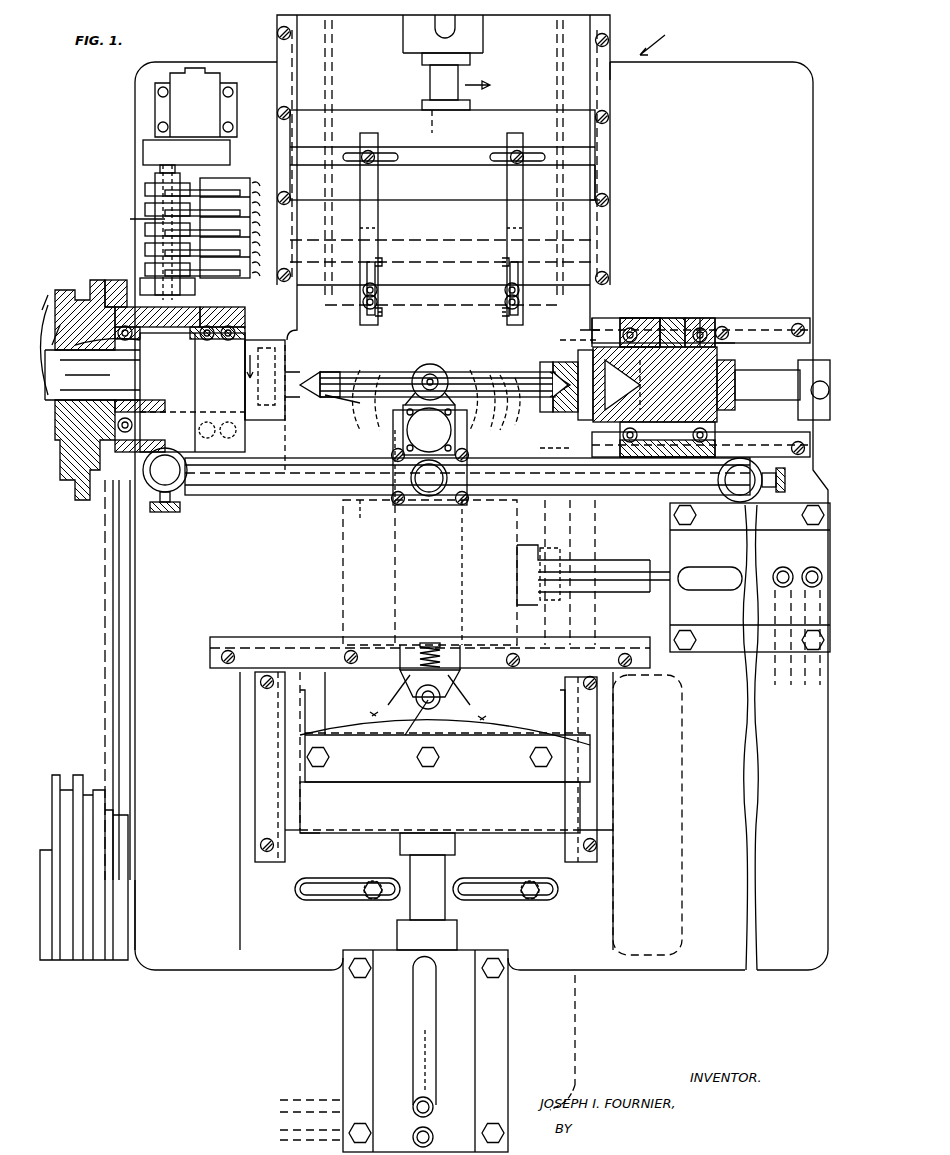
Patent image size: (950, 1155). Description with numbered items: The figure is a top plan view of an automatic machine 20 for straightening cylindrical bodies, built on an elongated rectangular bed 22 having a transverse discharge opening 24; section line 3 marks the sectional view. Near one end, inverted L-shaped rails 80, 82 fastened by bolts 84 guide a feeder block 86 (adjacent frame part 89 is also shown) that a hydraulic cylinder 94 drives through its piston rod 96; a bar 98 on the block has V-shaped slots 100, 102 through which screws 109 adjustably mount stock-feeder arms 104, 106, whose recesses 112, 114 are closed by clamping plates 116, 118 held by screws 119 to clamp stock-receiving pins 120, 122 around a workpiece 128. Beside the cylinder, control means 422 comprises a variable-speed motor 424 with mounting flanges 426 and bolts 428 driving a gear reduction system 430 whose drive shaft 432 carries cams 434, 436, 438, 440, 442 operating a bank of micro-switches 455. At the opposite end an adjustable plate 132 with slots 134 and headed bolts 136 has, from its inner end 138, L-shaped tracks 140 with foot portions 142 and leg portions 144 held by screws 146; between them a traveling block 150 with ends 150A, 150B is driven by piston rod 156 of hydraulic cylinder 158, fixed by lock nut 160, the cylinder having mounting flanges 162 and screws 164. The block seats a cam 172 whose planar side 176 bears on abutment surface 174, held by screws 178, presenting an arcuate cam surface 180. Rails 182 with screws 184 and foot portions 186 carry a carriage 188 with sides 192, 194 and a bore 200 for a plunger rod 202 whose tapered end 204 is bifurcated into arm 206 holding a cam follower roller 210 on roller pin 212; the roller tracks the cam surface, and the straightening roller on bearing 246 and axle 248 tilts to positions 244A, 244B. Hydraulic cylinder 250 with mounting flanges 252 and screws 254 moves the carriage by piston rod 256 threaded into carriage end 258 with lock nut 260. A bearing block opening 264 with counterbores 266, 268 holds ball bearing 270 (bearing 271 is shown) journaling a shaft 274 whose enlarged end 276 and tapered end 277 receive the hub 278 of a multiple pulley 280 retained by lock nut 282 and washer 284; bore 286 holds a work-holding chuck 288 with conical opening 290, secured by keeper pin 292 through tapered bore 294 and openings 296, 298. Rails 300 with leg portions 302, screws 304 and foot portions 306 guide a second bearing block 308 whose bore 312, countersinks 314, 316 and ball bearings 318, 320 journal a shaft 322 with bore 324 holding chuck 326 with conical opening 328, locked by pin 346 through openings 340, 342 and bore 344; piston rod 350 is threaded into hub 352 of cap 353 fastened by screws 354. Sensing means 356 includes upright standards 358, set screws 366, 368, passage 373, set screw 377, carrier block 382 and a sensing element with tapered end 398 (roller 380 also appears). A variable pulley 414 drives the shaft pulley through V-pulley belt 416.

The machine 20 is at (662, 38).
The bed 22 is at (771, 72).
The discharge opening 24 is at (594, 298).
The section line 3 is at (477, 77).
The L-shaped rail 80 is at (280, 82).
The L-shaped rail 82 is at (616, 82).
The bolts 84 is at (291, 36).
The feeder block 86 is at (598, 180).
The frame plate 89 is at (612, 198).
The hydraulic cylinder 94 is at (403, 42).
The piston rod 96 is at (430, 80).
The bar 98 is at (598, 160).
The V-shaped slot 100 is at (388, 165).
The V-shaped slot 102 is at (500, 165).
The stock-feeder arm 104 is at (378, 214).
The stock-feeder arm 106 is at (507, 214).
The screws 109 is at (372, 152).
The recess 112 is at (367, 266).
The recess 114 is at (516, 266).
The clamping plate 116 is at (378, 275).
The clamping plate 118 is at (502, 254).
The screws 119 is at (383, 258).
The stock-receiving pins 120 is at (378, 300).
The stock-receiving pins 122 is at (505, 300).
The workpiece 128 is at (355, 372).
The adjustable plate 132 is at (240, 905).
The slots 134 is at (330, 900).
The headed bolt 136 is at (375, 872).
The inner end 138 is at (368, 680).
The L-shaped track 140 is at (259, 800).
The foot portion 142 is at (310, 680).
The leg portion 144 is at (250, 716).
The screws 146 is at (255, 680).
The traveling block 150 is at (345, 835).
The end of traveling block 150A is at (285, 830).
The end of traveling block 150B is at (598, 824).
The piston rod 156 is at (445, 868).
The hydraulic cylinder 158 is at (470, 1060).
The lock nut 160 is at (455, 849).
The mounting flanges 162 is at (352, 1022).
The screws 164 is at (362, 980).
The cam 172 is at (480, 780).
The abutment surface 174 is at (380, 780).
The planar side 176 is at (300, 788).
The screws 178 is at (417, 757).
The cam surface 180 is at (534, 724).
The L-shaped rails 182 is at (275, 500).
The screws 184 is at (235, 500).
The foot portions 186 is at (246, 513).
The carriage 188 is at (343, 565).
The side of carriage 192 is at (370, 508).
The side of carriage 194 is at (490, 645).
The bore 200 is at (466, 553).
The plunger rod 202 is at (463, 666).
The tapered end 204 is at (458, 686).
The arm 206 is at (412, 690).
The cam follower roller 210 is at (440, 712).
The roller pin 212 is at (410, 724).
The tilted roller position 244A is at (360, 428).
The tilted roller position 244B is at (495, 425).
The bearing 246 is at (105, 282).
The axle 248 is at (525, 435).
The hydraulic cylinder 250 is at (668, 593).
The mounting flanges 252 is at (670, 520).
The screws 254 is at (697, 515).
The piston rod 256 is at (630, 556).
The end of carriage 258 is at (540, 612).
The lock nut 260 is at (538, 542).
The cylindrical opening 264 is at (195, 308).
The counterbore 266 is at (135, 430).
The counterbore 268 is at (245, 308).
The ball bearing 270 is at (80, 470).
The bearing 271 is at (232, 324).
The shaft 274 is at (192, 392).
The enlarged end 276 is at (302, 312).
The tapered shaft end 277 is at (80, 300).
The hub 278 is at (98, 353).
The multiple pulley 280 is at (60, 415).
The lock nut 282 is at (65, 378).
The washer 284 is at (60, 325).
The bore 286 is at (290, 400).
The work-holding chuck 288 is at (365, 405).
The conical opening 290 is at (340, 372).
The keeper pin 292 is at (287, 352).
The tapered bore 294 is at (246, 402).
The opening 296 is at (248, 350).
The opening 298 is at (270, 440).
The L-shaped rails 300 is at (760, 318).
The leg portions 302 is at (720, 300).
The screws 304 is at (795, 320).
The foot portions 306 is at (745, 340).
The second bearing block 308 is at (663, 316).
The bore 312 is at (672, 318).
The countersink 314 is at (600, 320).
The countersink 316 is at (700, 318).
The ball bearing 318 is at (580, 331).
The ball bearing 320 is at (718, 318).
The shaft 322 is at (655, 384).
The bore 324 is at (580, 356).
The work-holding chuck 326 is at (540, 370).
The conical opening 328 is at (553, 366).
The opening 340 is at (640, 345).
The opening 342 is at (667, 431).
The bore 344 is at (687, 350).
The locking pin 346 is at (550, 447).
The piston rod 350 is at (767, 385).
The hub 352 is at (735, 350).
The cap 353 is at (743, 332).
The screws 354 is at (737, 378).
The sensing means 356 is at (470, 502).
The upright standards 358 is at (175, 485).
The set screw 366 is at (785, 475).
The set screw 368 is at (166, 514).
The passage 373 is at (398, 510).
The set screw 377 is at (430, 490).
The roller 380 is at (436, 366).
The carrier block 382 is at (410, 368).
The tapered end 398 is at (822, 320).
The variable pulley 414 is at (76, 758).
The V-pulley belt 416 is at (105, 575).
The control means 422 is at (99, 202).
The variable-speed electric motor 424 is at (158, 98).
The mounting flanges 426 is at (158, 112).
The bolts 428 is at (158, 82).
The gear reduction system 430 is at (186, 152).
The drive shaft 432 is at (132, 214).
The cam 434 is at (145, 184).
The cam 436 is at (145, 202).
The cam 438 is at (145, 232).
The cam 440 is at (145, 248).
The cam 442 is at (145, 265).
The bank of micro-switches 455 is at (268, 165).